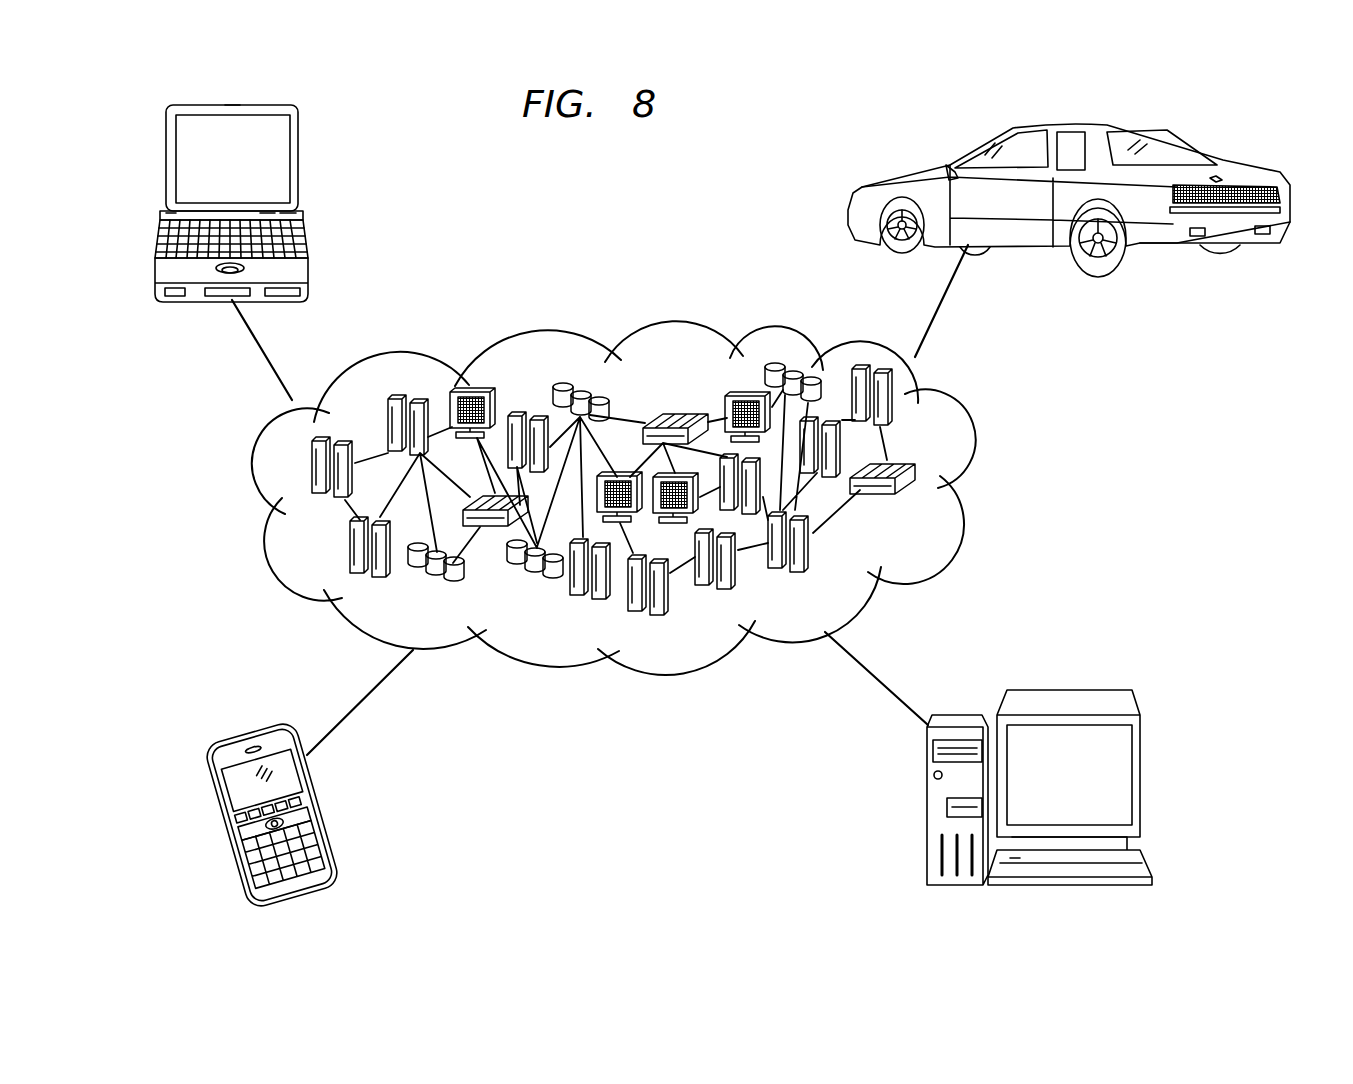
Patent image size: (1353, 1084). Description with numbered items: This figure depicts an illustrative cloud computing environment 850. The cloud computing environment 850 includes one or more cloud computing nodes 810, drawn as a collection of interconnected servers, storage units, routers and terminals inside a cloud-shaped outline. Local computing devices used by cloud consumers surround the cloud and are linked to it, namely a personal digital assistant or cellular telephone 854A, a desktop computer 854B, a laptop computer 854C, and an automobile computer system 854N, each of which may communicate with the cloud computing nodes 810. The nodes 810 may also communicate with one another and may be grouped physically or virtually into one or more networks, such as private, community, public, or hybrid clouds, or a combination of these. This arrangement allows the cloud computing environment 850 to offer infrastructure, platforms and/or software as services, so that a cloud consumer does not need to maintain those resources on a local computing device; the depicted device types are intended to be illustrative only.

The cloud computing nodes 810 is at (922, 505).
The cloud computing environment 850 is at (965, 422).
The personal digital assistant or cellular telephone 854A is at (210, 800).
The desktop computer 854B is at (1067, 690).
The laptop computer 854C is at (167, 155).
The automobile computer system 854N is at (1253, 165).